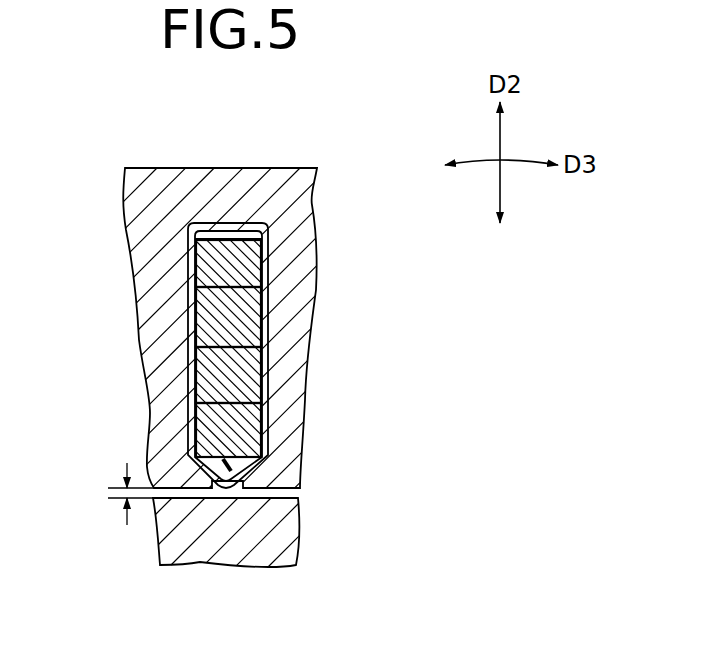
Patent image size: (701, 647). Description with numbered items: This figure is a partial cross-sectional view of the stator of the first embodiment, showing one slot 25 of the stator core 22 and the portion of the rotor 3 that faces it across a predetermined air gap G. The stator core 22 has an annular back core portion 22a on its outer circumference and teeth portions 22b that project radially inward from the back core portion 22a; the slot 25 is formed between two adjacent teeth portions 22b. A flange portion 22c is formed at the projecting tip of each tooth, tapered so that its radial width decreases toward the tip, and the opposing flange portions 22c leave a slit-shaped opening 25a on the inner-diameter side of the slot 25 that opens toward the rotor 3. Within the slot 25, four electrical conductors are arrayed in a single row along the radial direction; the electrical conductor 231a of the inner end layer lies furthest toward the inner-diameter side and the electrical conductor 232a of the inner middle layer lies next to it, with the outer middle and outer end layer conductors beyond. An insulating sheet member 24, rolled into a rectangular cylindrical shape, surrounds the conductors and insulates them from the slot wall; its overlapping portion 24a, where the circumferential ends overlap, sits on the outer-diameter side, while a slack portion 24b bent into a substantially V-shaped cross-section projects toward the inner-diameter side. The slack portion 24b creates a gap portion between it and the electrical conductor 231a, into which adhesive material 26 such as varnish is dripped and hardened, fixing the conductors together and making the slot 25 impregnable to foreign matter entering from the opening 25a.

The stator core 22 is at (168, 168).
The back core portion 22a is at (263, 182).
The teeth portions 22b is at (163, 420).
The flange portion 22c is at (193, 489).
The insulating sheet member 24 is at (193, 318).
The overlapping portion 24a is at (215, 226).
The slack portion 24b is at (239, 489).
The slot 25 is at (188, 252).
The opening 25a is at (218, 489).
The adhesive material 26 is at (246, 468).
The electrical conductor of the inner end layer 231a is at (253, 428).
The electrical conductor of the inner middle layer 232a is at (253, 370).
The rotor 3 is at (158, 538).
The air gap G is at (126, 494).